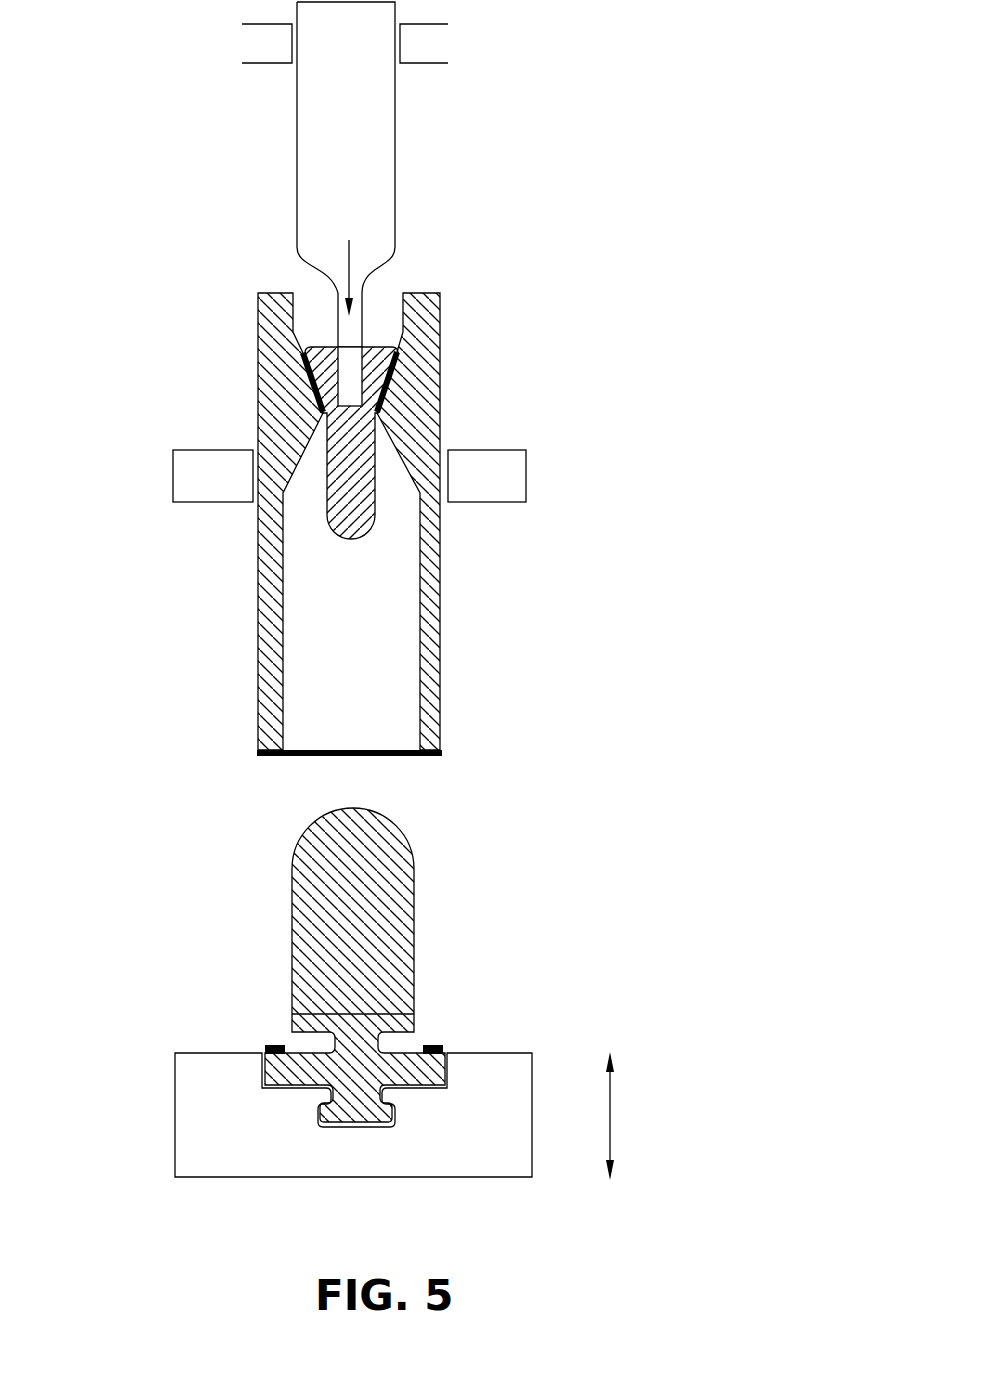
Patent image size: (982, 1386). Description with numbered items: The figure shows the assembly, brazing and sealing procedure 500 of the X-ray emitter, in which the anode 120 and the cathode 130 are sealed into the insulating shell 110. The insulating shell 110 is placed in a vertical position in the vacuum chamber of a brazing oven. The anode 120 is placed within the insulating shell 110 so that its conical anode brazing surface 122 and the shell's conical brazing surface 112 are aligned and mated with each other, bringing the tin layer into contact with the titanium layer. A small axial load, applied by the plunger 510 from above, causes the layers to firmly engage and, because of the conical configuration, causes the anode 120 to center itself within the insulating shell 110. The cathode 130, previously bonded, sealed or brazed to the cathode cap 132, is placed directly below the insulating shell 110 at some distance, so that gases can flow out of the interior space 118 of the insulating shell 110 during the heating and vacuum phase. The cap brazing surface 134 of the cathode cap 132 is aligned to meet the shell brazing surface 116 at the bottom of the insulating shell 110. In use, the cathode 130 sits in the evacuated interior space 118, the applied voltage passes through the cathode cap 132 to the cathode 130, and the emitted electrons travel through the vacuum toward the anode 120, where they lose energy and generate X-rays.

The pellet forming apparatus 500 is at (625, 549).
The plunger 510 is at (395, 170).
The insulating shell 110 is at (428, 603).
The conical brazing surface 112 is at (300, 397).
The shell brazing surface 116 is at (278, 755).
The interior space 118 is at (357, 650).
The anode 120 is at (348, 500).
The conical anode brazing surface 122 is at (300, 397).
The cathode 130 is at (372, 923).
The cathode cap 132 is at (298, 1057).
The cap brazing surface 134 is at (438, 1037).